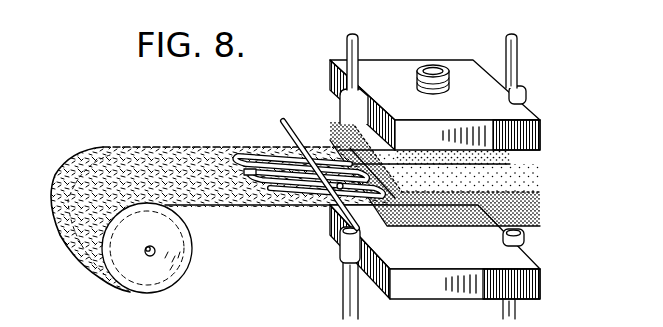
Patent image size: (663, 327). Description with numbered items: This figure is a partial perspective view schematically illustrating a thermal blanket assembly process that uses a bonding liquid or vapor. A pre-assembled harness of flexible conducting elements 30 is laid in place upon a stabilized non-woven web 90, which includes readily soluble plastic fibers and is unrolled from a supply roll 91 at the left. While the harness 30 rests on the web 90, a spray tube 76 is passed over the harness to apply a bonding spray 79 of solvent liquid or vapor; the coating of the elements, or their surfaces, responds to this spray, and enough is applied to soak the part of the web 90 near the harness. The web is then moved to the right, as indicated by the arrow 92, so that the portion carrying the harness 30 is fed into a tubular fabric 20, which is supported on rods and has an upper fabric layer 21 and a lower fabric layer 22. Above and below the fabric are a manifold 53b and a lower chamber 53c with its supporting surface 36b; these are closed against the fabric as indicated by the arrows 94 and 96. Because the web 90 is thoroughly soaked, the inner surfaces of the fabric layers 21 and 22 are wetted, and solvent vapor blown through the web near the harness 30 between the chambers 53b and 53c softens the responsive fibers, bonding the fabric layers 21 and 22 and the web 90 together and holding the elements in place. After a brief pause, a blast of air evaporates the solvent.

The tubular fabric 20 is at (515, 185).
The fabric layer 21 is at (512, 163).
The fabric layer 22 is at (492, 227).
The harness of flexible conducting elements 30 is at (300, 195).
The supporting surface 36b is at (415, 259).
The manifold 53b is at (518, 114).
The chamber 53c is at (466, 266).
The spray tube 76 is at (293, 124).
The bonding spray 79 is at (284, 128).
The stabilized non-woven web 90 is at (141, 153).
The supply roll 91 is at (116, 282).
The arrow 92 is at (198, 137).
The arrow 94 is at (533, 33).
The arrow 96 is at (530, 326).